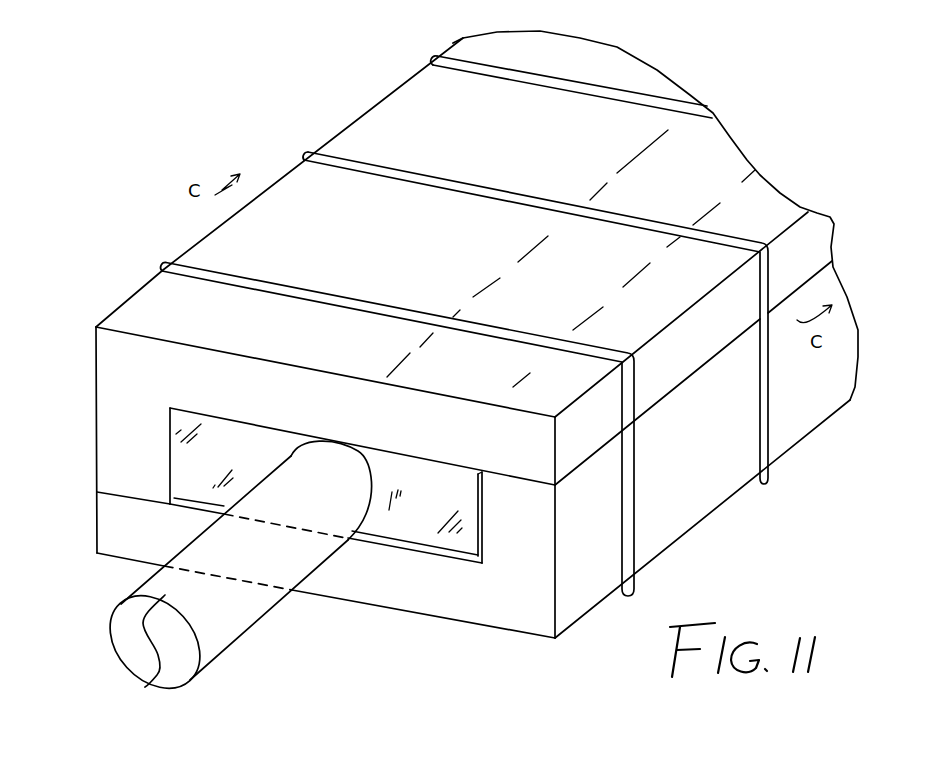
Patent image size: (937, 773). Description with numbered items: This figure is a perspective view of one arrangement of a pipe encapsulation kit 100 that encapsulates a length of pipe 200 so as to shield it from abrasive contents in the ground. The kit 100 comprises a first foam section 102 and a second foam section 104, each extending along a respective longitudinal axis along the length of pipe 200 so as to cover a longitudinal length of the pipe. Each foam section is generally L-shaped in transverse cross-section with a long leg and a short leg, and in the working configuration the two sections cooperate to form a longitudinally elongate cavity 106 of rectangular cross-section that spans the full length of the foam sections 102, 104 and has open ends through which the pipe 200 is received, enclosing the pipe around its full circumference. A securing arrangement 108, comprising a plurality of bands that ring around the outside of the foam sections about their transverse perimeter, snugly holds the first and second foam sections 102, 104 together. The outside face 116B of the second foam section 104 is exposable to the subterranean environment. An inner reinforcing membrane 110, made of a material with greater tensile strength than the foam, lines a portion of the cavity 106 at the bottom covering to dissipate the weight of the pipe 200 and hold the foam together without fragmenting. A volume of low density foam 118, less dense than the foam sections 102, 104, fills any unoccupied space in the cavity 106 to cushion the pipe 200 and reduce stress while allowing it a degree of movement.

The pipe encapsulation kit 100 is at (93, 85).
The first foam section 102 is at (462, 607).
The second foam section 104 is at (106, 383).
The longitudinally elongate cavity 106 is at (223, 442).
The securing arrangement 108 is at (637, 548).
The inner reinforcing membrane 110 is at (397, 540).
The outside face 116B is at (157, 310).
The low density foam 118 is at (398, 475).
The length of pipe 200 is at (242, 635).